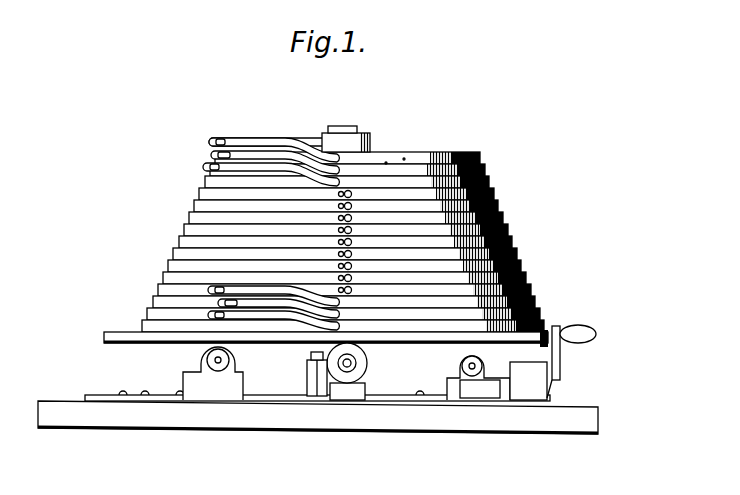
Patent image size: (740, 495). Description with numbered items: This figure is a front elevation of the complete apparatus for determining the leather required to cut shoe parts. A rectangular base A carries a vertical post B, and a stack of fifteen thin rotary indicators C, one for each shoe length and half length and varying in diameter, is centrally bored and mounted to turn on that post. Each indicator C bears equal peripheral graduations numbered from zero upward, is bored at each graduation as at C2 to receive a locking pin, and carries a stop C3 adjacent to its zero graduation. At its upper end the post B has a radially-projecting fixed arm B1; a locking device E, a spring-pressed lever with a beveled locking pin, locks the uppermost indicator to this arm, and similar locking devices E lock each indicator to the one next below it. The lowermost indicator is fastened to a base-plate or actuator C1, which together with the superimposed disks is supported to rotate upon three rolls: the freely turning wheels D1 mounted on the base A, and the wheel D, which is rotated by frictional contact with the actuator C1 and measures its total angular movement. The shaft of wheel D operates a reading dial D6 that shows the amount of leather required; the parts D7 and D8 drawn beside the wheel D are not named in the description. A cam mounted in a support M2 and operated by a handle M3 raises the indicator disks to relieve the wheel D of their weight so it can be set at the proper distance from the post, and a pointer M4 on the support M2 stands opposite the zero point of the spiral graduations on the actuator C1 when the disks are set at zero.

The base A is at (462, 425).
The vertical post B is at (346, 127).
The radially-projecting fixed arm B1 is at (305, 135).
The indicator C is at (543, 318).
The base-plate or actuator C1 is at (104, 335).
The bore at peripheral graduation C2 is at (404, 158).
The stop C3 is at (312, 213).
The wheel D is at (368, 364).
The wheel D1 is at (200, 354).
The reading dial D6 is at (308, 367).
The cam block D7 is at (308, 366).
The pin D8 is at (306, 378).
The locking device E is at (248, 113).
The support M2 is at (530, 385).
The operating handle M3 is at (597, 338).
The pointer M4 is at (548, 392).